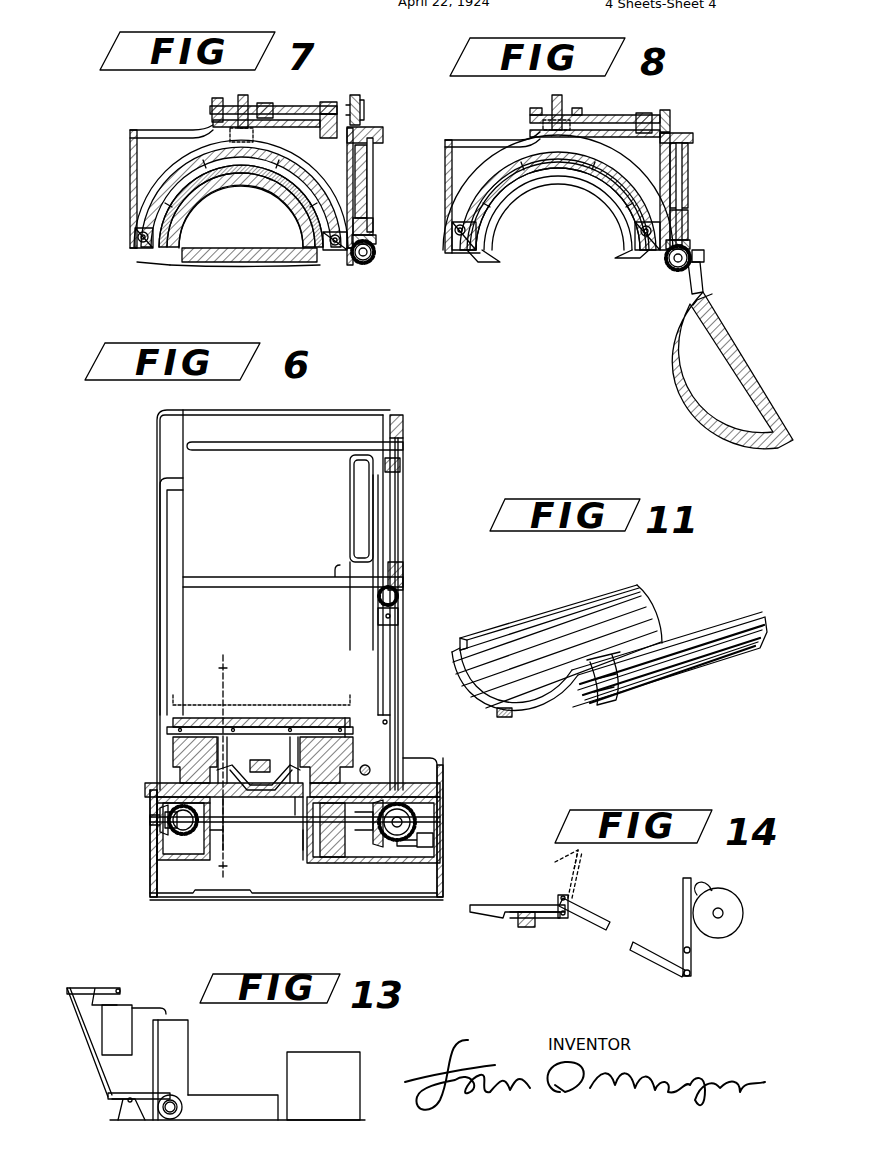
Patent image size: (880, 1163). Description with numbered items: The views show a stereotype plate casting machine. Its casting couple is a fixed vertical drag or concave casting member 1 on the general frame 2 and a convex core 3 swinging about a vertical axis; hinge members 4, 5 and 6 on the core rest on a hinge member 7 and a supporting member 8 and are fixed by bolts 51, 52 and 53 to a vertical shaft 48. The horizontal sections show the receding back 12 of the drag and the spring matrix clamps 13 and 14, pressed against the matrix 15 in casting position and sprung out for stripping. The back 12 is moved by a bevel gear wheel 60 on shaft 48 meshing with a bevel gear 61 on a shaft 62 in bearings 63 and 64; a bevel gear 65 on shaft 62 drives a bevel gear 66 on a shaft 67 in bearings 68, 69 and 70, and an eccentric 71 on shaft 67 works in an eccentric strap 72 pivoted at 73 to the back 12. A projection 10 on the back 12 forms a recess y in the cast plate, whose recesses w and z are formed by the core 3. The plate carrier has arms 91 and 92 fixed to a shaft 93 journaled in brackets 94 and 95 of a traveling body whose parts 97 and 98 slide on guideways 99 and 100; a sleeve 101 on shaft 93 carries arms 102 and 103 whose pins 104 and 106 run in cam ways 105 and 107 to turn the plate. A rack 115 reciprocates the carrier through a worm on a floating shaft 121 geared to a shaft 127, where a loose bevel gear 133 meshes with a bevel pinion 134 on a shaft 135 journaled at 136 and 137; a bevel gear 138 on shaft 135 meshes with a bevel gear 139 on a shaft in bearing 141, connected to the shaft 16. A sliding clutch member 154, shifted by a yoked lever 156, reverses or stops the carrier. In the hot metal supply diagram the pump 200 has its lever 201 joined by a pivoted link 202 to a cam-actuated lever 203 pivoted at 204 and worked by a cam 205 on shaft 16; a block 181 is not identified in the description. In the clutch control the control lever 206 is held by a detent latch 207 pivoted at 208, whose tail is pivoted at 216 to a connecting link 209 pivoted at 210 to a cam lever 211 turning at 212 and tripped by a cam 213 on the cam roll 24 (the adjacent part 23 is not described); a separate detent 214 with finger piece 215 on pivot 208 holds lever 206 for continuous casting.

In FIG. 7, the drag or concave casting member 1 is at (130, 132).
In FIG. 6, the drag or concave casting member 1 is at (157, 438).
In FIG. 13, the drag or concave casting member 1 is at (153, 1063).
In FIG. 6, the general frame 2 is at (443, 880).
In FIG. 13, the general frame 2 is at (235, 1105).
In FIG. 7, the core 3 is at (232, 263).
In FIG. 8, the core 3 is at (672, 340).
In FIG. 6, the core 3 is at (210, 516).
In FIG. 13, the core 3 is at (190, 1058).
In FIG. 6, the hinge member 4 is at (390, 415).
In FIG. 6, the hinge member 5 is at (400, 575).
In FIG. 7, the hinge member 6 is at (368, 260).
In FIG. 8, the hinge member 6 is at (700, 258).
In FIG. 6, the hinge member 6 is at (403, 700).
In FIG. 6, the hinge member 7 is at (400, 466).
In FIG. 6, the supporting member 8 is at (405, 750).
In FIG. 6, the projection 10 is at (227, 762).
In FIG. 7, the receding back 12 is at (200, 148).
In FIG. 8, the receding back 12 is at (500, 148).
In FIG. 7, the spring matrix clamp 13 is at (138, 250).
In FIG. 8, the spring matrix clamp 13 is at (462, 253).
In FIG. 6, the spring matrix clamp 13 is at (167, 545).
In FIG. 7, the spring matrix clamp 14 is at (338, 252).
In FIG. 8, the spring matrix clamp 14 is at (645, 253).
In FIG. 6, the spring matrix clamp 14 is at (370, 510).
In FIG. 7, the matrix 15 is at (222, 187).
In FIG. 8, the matrix 15 is at (585, 193).
In FIG. 13, the shaft 16 is at (164, 1118).
In FIG. 14, the cam shaft 23 is at (722, 915).
In FIG. 14, the cam roll 24 is at (730, 898).
In FIG. 7, the vertically disposed shaft 48 is at (372, 250).
In FIG. 8, the vertically disposed shaft 48 is at (702, 272).
In FIG. 6, the vertically disposed shaft 48 is at (403, 645).
In FIG. 6, the clamping bolt 51 is at (403, 718).
In FIG. 6, the clamping bolt 52 is at (403, 578).
In FIG. 6, the clamping bolt 53 is at (403, 440).
In FIG. 7, the bevel gear wheel 60 is at (376, 256).
In FIG. 8, the bevel gear wheel 60 is at (668, 264).
In FIG. 6, the bevel gear wheel 60 is at (398, 616).
In FIG. 7, the bevel gear 61 is at (376, 239).
In FIG. 8, the bevel gear 61 is at (690, 244).
In FIG. 6, the bevel gear 61 is at (398, 597).
In FIG. 7, the shaft 62 is at (373, 196).
In FIG. 8, the shaft 62 is at (684, 190).
In FIG. 7, the bearing 63 is at (373, 222).
In FIG. 8, the bearing 63 is at (688, 225).
In FIG. 7, the bearing 64 is at (373, 162).
In FIG. 8, the bearing 64 is at (688, 165).
In FIG. 7, the bevel gear 65 is at (383, 136).
In FIG. 8, the bevel gear 65 is at (692, 137).
In FIG. 7, the bevel gear 66 is at (364, 110).
In FIG. 8, the bevel gear 66 is at (668, 110).
In FIG. 7, the shaft 67 is at (303, 100).
In FIG. 8, the shaft 67 is at (608, 115).
In FIG. 7, the bearing 68 is at (218, 98).
In FIG. 8, the bearing 68 is at (533, 108).
In FIG. 7, the bearing 69 is at (325, 102).
In FIG. 8, the bearing 69 is at (577, 108).
In FIG. 7, the bearing 70 is at (332, 114).
In FIG. 8, the bearing 70 is at (644, 113).
In FIG. 7, the eccentric 71 is at (250, 100).
In FIG. 7, the eccentric strap 72 is at (265, 103).
In FIG. 8, the eccentric strap 72 is at (557, 95).
In FIG. 7, the pivotal connection 73 is at (230, 135).
In FIG. 6, the arm 91 is at (173, 722).
In FIG. 6, the arm 92 is at (350, 718).
In FIG. 6, the shaft 93 is at (167, 732).
In FIG. 6, the bracket 94 is at (200, 718).
In FIG. 6, the bracket 95 is at (320, 718).
In FIG. 6, the downwardly projecting part 97 is at (175, 757).
In FIG. 6, the downwardly projecting part 98 is at (353, 752).
In FIG. 6, the guideway 99 is at (180, 775).
In FIG. 6, the guideway 100 is at (318, 780).
In FIG. 6, the sleeve 101 is at (305, 718).
In FIG. 6, the arm 102 is at (242, 788).
In FIG. 6, the arm 103 is at (295, 811).
In FIG. 6, the pin 104 is at (230, 812).
In FIG. 6, the cam way 105 is at (157, 800).
In FIG. 6, the pin 106 is at (290, 815).
In FIG. 6, the guideway 107 is at (310, 852).
In FIG. 6, the straight rack 115 is at (260, 760).
In FIG. 6, the floating shaft 121 is at (370, 770).
In FIG. 6, the shaft 127 is at (395, 810).
In FIG. 6, the bevel gear wheel 133 is at (418, 824).
In FIG. 6, the bevel pinion 134 is at (387, 863).
In FIG. 6, the shaft 135 is at (290, 863).
In FIG. 6, the bearing 136 is at (335, 863).
In FIG. 6, the bearing 137 is at (160, 818).
In FIG. 6, the bevel gear 138 is at (165, 820).
In FIG. 6, the bevel gear 139 is at (175, 832).
In FIG. 6, the bearing 141 is at (185, 845).
In FIG. 6, the clutch member 154 is at (400, 812).
In FIG. 6, the yoked lever 156 is at (433, 840).
In FIG. 13, the tank 181 is at (322, 1062).
In FIG. 13, the pump 200 is at (120, 1005).
In FIG. 13, the lever 201 is at (120, 985).
In FIG. 13, the pivoted link 202 is at (80, 1035).
In FIG. 13, the cam-actuated lever 203 is at (108, 1096).
In FIG. 13, the pivot 204 is at (128, 1102).
In FIG. 13, the cam 205 is at (175, 1115).
In FIG. 14, the control lever 206 is at (524, 927).
In FIG. 14, the detent latch 207 is at (532, 912).
In FIG. 14, the pivot 208 is at (563, 920).
In FIG. 14, the connecting link 209 is at (645, 945).
In FIG. 14, the pivot 210 is at (685, 975).
In FIG. 14, the cam lever 211 is at (683, 888).
In FIG. 14, the pivot 212 is at (690, 952).
In FIG. 14, the cam 213 is at (700, 886).
In FIG. 14, the detent 214 is at (555, 862).
In FIG. 14, the finger piece 215 is at (472, 910).
In FIG. 14, the pivot 216 is at (572, 896).
In FIG. 11, the recess w is at (455, 647).
In FIG. 11, the recess y is at (505, 717).
In FIG. 11, the recess z is at (590, 705).